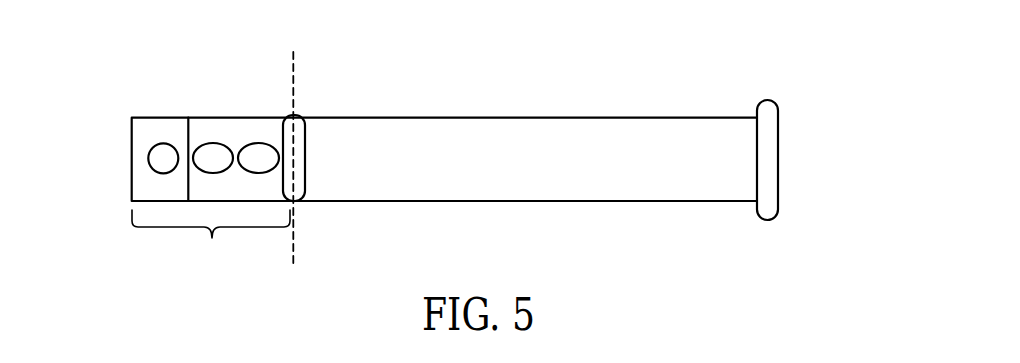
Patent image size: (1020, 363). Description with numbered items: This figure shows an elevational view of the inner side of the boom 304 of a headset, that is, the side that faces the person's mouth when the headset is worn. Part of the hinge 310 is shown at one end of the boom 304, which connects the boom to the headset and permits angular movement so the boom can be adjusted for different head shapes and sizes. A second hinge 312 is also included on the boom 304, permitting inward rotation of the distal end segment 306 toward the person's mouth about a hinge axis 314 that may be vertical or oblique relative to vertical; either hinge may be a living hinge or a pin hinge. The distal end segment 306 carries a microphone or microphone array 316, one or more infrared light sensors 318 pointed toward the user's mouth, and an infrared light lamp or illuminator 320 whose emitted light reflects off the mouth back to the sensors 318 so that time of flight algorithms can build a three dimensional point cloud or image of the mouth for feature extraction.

The boom 304 is at (774, 77).
The distal end segment 306 is at (211, 193).
The hinge 310 is at (778, 158).
The second hinge 312 is at (305, 163).
The hinge axis 314 is at (294, 79).
The microphone or microphone array 316 is at (131, 158).
The infrared light sensor 318 is at (205, 143).
The infrared light lamp or illuminator 320 is at (260, 143).